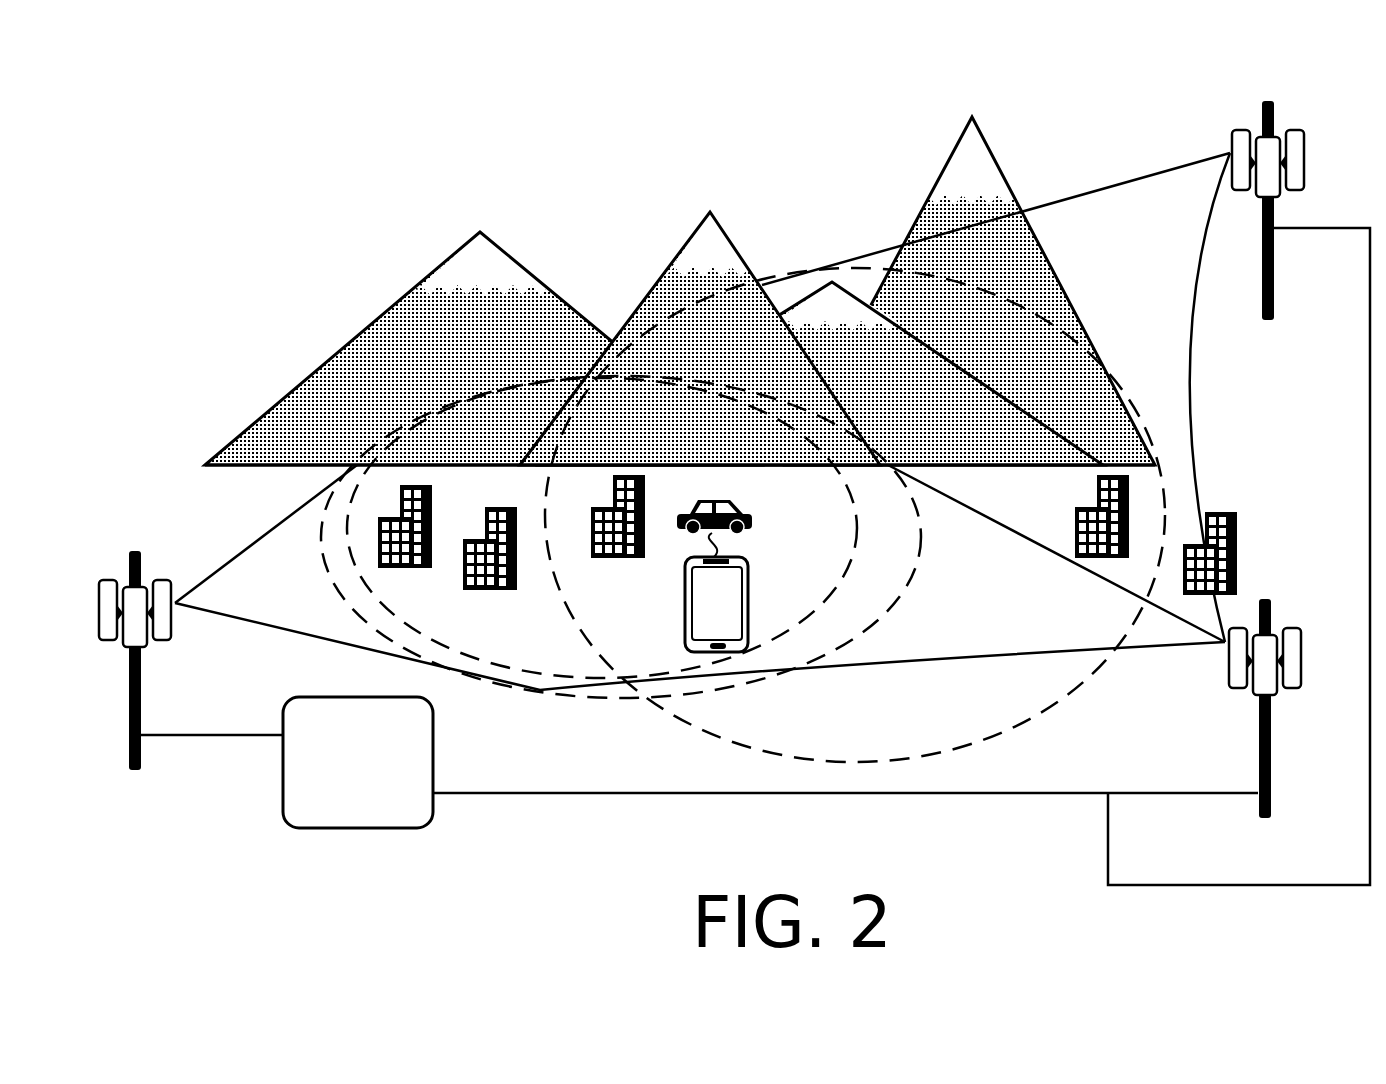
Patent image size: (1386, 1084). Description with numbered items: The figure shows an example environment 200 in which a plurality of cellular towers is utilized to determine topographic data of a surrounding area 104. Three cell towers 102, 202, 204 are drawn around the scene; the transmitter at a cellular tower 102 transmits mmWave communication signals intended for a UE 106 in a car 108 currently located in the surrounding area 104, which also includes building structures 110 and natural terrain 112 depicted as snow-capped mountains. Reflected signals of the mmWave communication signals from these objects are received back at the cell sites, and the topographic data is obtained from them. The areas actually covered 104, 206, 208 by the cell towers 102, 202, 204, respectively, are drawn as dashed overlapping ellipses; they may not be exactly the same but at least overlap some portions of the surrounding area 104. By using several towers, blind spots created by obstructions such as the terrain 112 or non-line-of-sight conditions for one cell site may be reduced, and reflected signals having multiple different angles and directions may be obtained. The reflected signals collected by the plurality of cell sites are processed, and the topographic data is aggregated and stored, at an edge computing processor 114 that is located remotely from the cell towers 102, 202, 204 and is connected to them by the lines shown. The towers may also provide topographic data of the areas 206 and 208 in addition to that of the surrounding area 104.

The environment 200 is at (160, 112).
The natural terrain 112 is at (1078, 118).
The cellular tower 102 is at (157, 804).
The cell tower 202 is at (1285, 854).
The cell tower 204 is at (1289, 357).
The surrounding area 104 is at (322, 582).
The area covered 206 is at (842, 544).
The area covered 208 is at (915, 754).
The building structures 110 is at (658, 580).
The car 108 is at (739, 497).
The UE 106 is at (739, 617).
The edge computing processor 114 is at (380, 819).